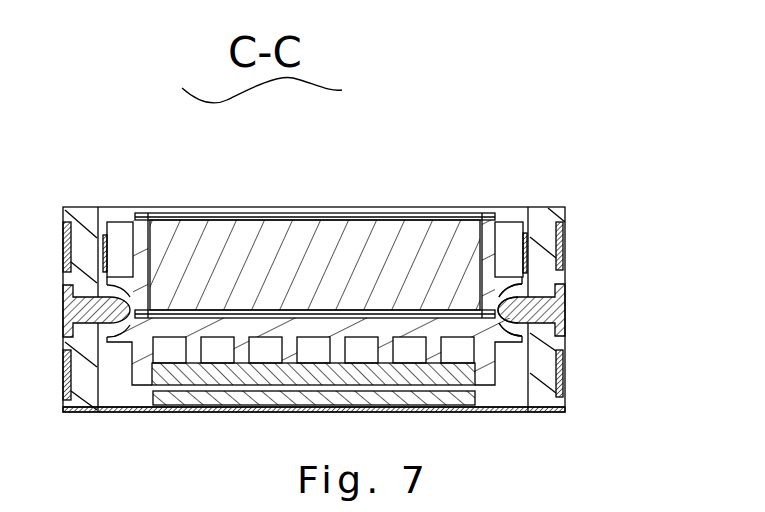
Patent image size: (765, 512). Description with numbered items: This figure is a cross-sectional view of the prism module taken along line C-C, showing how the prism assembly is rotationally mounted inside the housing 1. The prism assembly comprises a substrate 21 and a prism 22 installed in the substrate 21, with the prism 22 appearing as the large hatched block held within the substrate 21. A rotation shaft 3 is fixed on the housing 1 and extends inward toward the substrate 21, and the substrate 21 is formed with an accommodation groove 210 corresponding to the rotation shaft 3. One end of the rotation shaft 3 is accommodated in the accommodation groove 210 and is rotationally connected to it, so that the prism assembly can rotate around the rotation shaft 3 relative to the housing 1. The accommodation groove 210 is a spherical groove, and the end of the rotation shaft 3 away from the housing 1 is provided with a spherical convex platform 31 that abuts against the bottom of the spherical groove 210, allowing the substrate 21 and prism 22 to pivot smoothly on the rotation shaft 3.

The housing 1 is at (547, 232).
The substrate 21 is at (490, 243).
The prism 22 is at (427, 260).
The rotation shaft 3 is at (563, 300).
The spherical convex platform 31 is at (523, 290).
The accommodation groove 210 is at (513, 327).